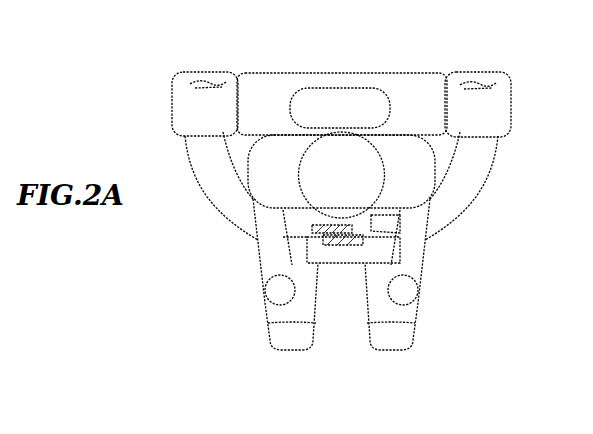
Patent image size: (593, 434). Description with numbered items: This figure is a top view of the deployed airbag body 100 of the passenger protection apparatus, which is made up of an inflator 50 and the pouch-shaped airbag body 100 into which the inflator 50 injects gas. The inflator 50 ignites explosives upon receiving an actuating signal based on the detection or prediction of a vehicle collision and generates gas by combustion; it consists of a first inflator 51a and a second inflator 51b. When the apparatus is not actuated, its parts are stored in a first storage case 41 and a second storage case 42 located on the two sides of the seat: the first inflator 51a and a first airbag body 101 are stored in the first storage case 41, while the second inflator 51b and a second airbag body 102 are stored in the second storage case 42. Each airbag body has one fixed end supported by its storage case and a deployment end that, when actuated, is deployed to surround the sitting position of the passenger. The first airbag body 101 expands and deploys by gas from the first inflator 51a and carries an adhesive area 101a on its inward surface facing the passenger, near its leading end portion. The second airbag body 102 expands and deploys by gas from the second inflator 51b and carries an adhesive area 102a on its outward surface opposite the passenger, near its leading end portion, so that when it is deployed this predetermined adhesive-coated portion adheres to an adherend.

The inflator 50 is at (377, 37).
The first inflator 51a is at (474, 73).
The second inflator 51b is at (208, 74).
The first storage case 41 is at (511, 105).
The second storage case 42 is at (172, 101).
The airbag body 100 is at (177, 242).
The first airbag body 101 is at (293, 260).
The second airbag body 102 is at (235, 214).
The adhesive area 101a is at (313, 263).
The adhesive area 102a is at (350, 227).